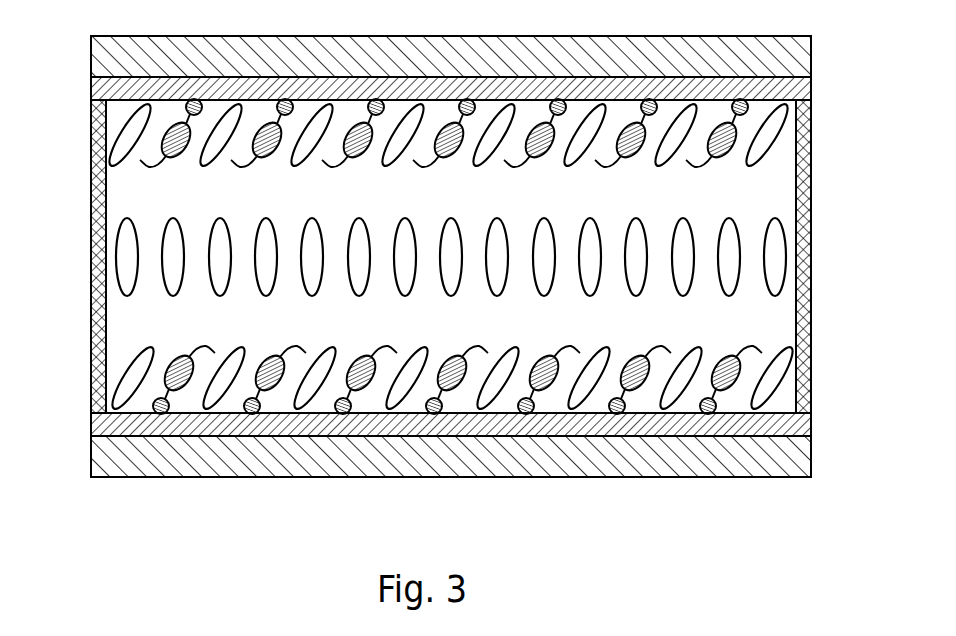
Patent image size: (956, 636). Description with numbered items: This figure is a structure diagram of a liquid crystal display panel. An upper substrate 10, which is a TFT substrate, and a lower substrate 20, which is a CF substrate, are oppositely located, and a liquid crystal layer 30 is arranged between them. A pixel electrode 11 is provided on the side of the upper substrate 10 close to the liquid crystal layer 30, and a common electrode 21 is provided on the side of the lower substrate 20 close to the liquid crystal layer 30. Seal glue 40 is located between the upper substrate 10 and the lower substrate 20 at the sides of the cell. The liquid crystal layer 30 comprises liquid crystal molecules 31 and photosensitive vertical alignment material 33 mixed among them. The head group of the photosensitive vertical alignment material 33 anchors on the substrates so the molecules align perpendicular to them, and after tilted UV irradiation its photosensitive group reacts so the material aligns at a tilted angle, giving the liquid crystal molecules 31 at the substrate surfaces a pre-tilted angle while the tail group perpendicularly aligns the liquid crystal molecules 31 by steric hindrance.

The upper substrate 10 is at (817, 36).
The pixel electrode 11 is at (92, 96).
The lower substrate 20 is at (817, 413).
The common electrode 21 is at (92, 428).
The liquid crystal layer 30 is at (455, 256).
The liquid crystal molecules 31 is at (128, 255).
The photosensitive vertical alignment material 33 is at (157, 162).
The seal glue 40 is at (812, 220).